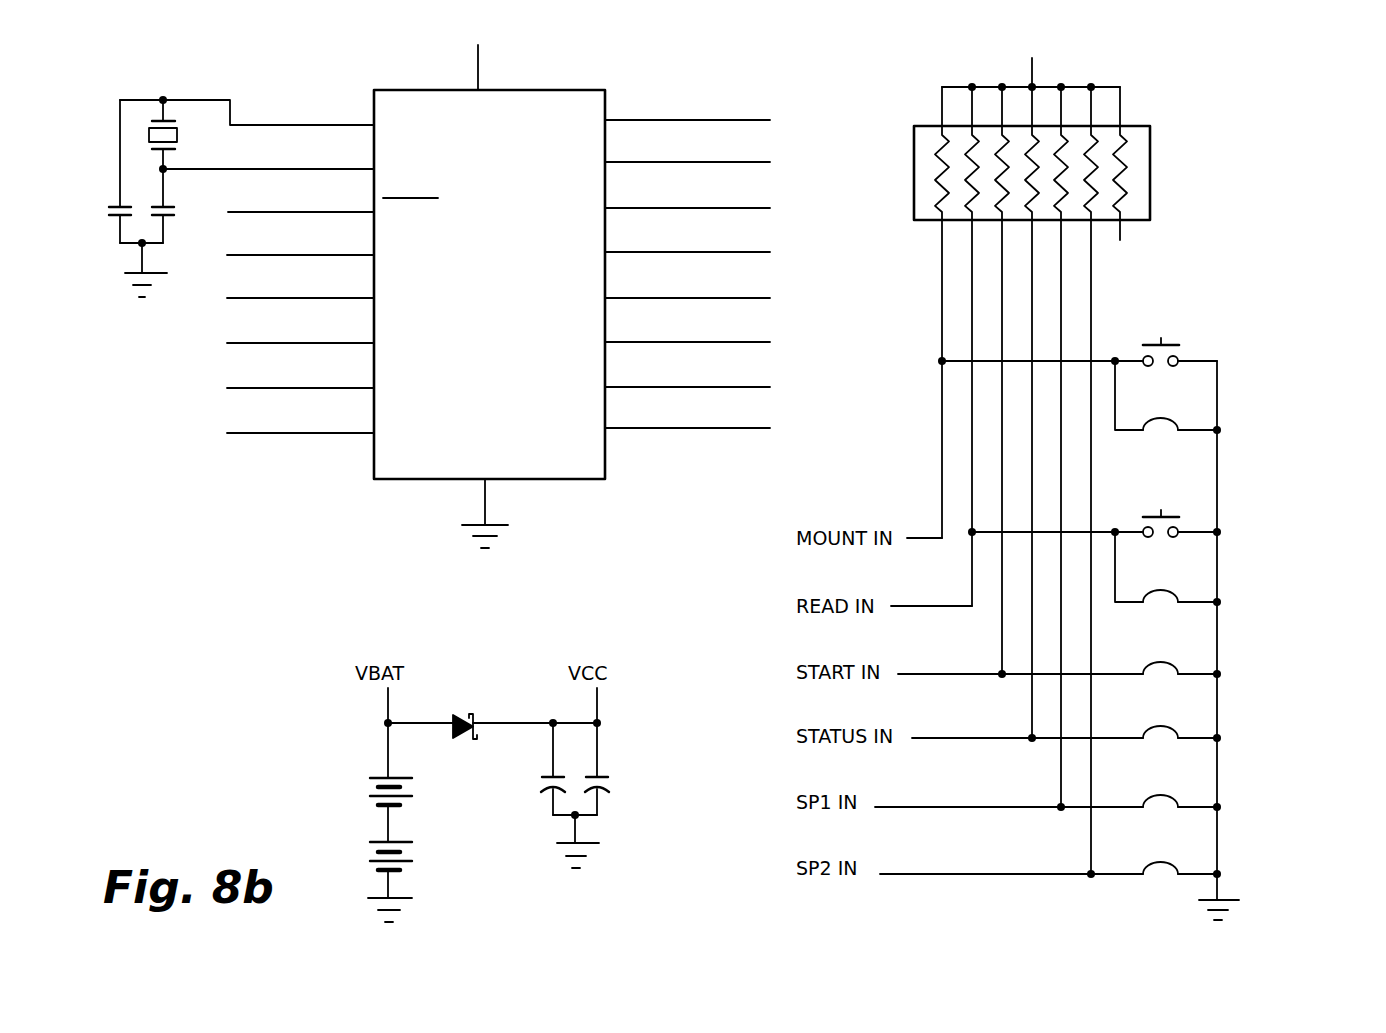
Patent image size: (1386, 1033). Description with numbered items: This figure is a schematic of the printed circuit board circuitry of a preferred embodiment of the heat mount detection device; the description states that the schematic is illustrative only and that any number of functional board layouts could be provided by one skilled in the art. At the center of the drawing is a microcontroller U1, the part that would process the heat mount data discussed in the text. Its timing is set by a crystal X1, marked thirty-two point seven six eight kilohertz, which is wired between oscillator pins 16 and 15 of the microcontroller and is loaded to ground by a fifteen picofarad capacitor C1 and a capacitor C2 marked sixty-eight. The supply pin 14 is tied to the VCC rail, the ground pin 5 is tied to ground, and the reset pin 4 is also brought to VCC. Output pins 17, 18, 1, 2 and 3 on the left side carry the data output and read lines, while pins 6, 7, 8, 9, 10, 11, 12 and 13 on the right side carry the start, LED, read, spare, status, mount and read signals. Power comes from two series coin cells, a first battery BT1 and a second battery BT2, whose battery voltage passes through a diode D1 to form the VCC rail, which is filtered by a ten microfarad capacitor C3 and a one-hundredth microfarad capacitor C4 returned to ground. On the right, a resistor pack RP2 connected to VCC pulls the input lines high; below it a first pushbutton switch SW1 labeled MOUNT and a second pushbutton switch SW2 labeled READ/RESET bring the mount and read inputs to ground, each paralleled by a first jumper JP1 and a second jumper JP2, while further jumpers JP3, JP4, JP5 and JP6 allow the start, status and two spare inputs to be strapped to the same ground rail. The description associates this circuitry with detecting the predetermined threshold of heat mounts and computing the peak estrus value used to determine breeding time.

The microcontroller PIC16C621 U1 is at (500, 313).
The 32.768 kHz crystal X1 is at (220, 132).
The capacitor 15pF C1 is at (101, 171).
The capacitor 68pF C2 is at (177, 204).
The capacitor 10uF C3 is at (527, 769).
The capacitor 0.01uF C4 is at (631, 769).
The diode 1N5817 D1 is at (490, 701).
The battery BR2032 BT1 is at (345, 782).
The battery BR2032 BT2 is at (345, 882).
The resistor pack 1.2K RP2 is at (1111, 149).
The mount switch B3S-1000 SW1 is at (1118, 329).
The read/reset switch B3S-1000 SW2 is at (1158, 500).
The jumper 1 JP1 is at (1168, 397).
The jumper 2 JP2 is at (1168, 569).
The jumper 3 JP3 is at (1092, 658).
The jumper 4 JP4 is at (1105, 723).
The jumper 5 JP5 is at (1091, 790).
The jumper 6 JP6 is at (1093, 857).
The U1 pin 1 RA2/AN2/VREF 1 is at (300, 331).
The U1 pin 2 RA3/AN3 2 is at (300, 376).
The U1 pin 3 RA4/T0CK1 3 is at (300, 420).
The U1 pin 4 MCLR 4 is at (301, 198).
The U1 pin 5 VSS 5 is at (481, 513).
The U1 pin 6 RB0/INT 6 is at (687, 107).
The U1 pin 7 RB1 7 is at (687, 150).
The U1 pin 8 RB2 8 is at (687, 196).
The U1 pin 9 RB3 9 is at (687, 240).
The U1 pin 10 RB4 10 is at (687, 286).
The U1 pin 11 RB5 11 is at (687, 329).
The U1 pin 12 RB6 12 is at (687, 374).
The U1 pin 13 RB7 13 is at (687, 417).
The U1 pin 14 VDD 14 is at (487, 67).
The U1 pin 15 OSC2 15 is at (268, 155).
The U1 pin 16 OSC1 16 is at (247, 112).
The U1 pin 17 RA0/AN0 17 is at (300, 242).
The U1 pin 18 RA1/AN1 18 is at (300, 285).